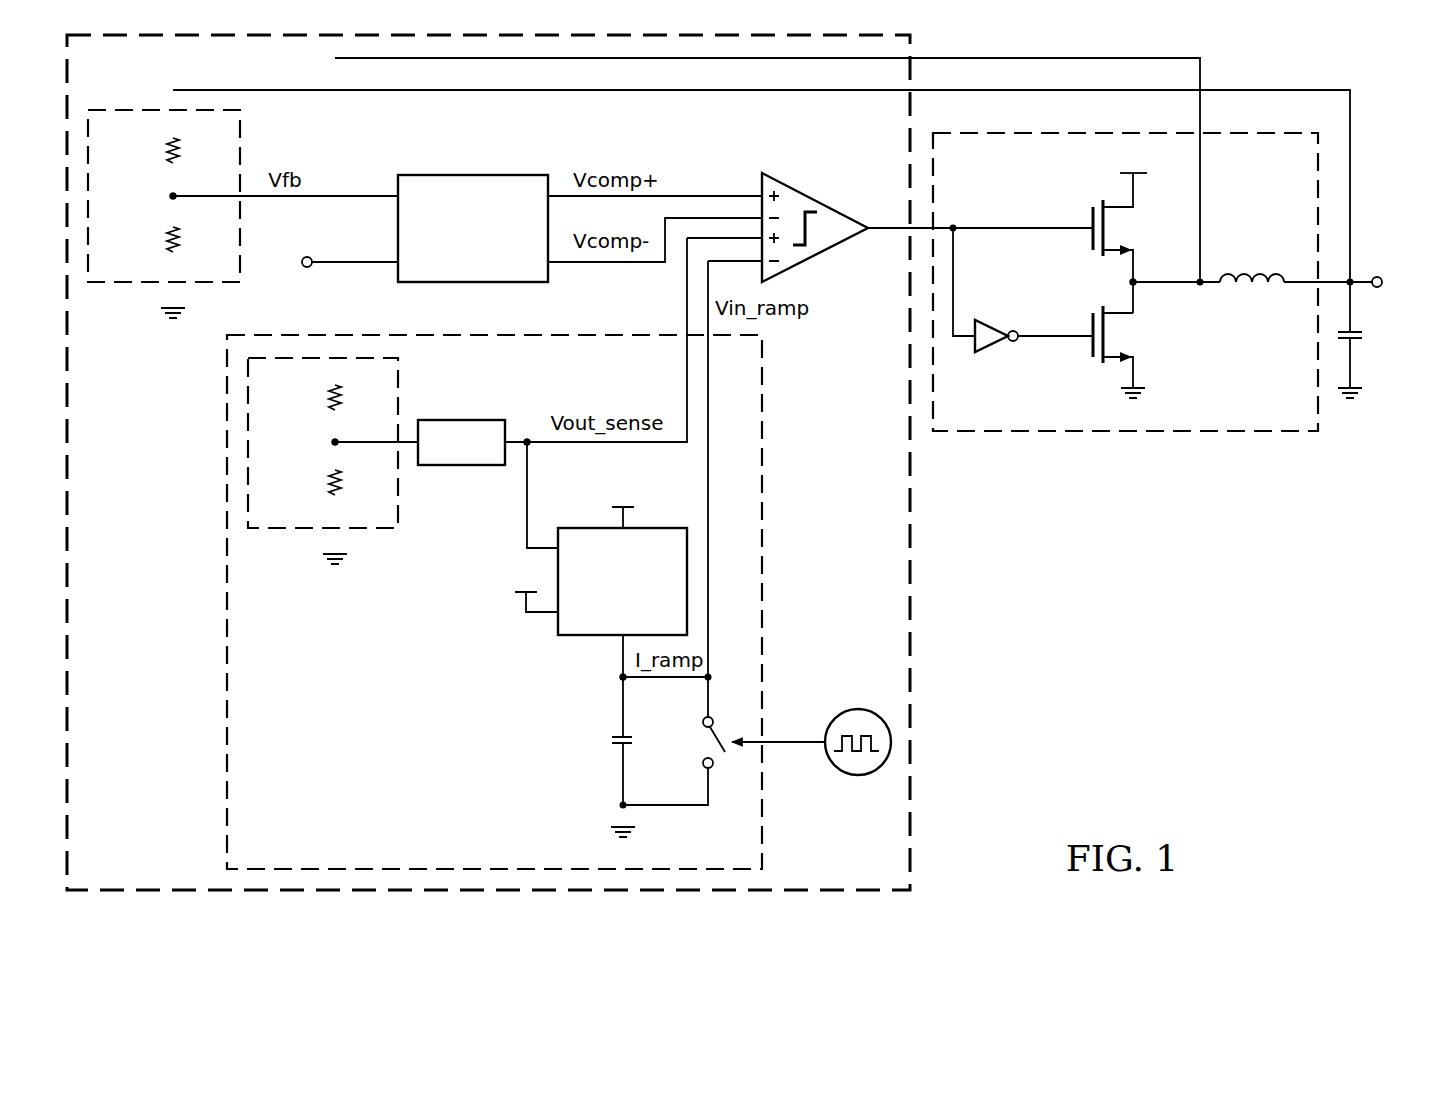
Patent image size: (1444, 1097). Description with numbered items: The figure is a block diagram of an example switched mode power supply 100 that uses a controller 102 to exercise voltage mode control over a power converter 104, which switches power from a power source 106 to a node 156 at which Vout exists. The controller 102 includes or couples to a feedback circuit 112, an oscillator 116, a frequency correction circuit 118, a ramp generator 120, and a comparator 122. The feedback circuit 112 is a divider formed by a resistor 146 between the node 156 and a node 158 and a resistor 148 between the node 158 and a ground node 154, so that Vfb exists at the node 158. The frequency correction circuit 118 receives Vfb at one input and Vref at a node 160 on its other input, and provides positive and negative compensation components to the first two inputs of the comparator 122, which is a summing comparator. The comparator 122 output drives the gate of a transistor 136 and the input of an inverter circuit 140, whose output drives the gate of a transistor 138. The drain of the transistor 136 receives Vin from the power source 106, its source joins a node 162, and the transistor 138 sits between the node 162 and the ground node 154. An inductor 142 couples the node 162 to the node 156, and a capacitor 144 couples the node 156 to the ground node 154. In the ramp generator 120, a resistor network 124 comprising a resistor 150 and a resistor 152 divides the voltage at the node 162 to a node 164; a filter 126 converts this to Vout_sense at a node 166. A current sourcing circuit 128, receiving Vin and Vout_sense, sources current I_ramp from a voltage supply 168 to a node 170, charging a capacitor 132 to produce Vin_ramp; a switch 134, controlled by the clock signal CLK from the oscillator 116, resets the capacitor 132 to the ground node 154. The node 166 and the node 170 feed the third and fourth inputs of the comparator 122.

The switched mode power supply 100 is at (1260, 719).
The controller 102 is at (917, 568).
The power converter 104 is at (1187, 436).
The power source 106 is at (1145, 176).
The feedback circuit 112 is at (148, 106).
The oscillator 116 is at (857, 776).
The frequency correction circuit 118 is at (473, 173).
The ramp generator 120 is at (766, 602).
The comparator 122 is at (810, 197).
The resistor network 124 is at (292, 530).
The filter 126 is at (463, 420).
The current sourcing circuit 128 is at (630, 637).
The capacitor 132 is at (610, 740).
The switch 134 is at (705, 737).
The transistor 136 is at (1089, 218).
The transistor 138 is at (1089, 325).
The inverter circuit 140 is at (992, 348).
The inductor 142 is at (1262, 263).
The capacitor 144 is at (1363, 334).
The resistor 146 is at (168, 146).
The resistor 148 is at (166, 240).
The resistor 150 is at (328, 396).
The resistor 152 is at (328, 484).
The ground node 154 is at (162, 313).
The node 156 is at (1378, 277).
The node 158 is at (178, 200).
The node 160 is at (304, 268).
The node 162 is at (1138, 286).
The node 164 is at (340, 447).
The node 166 is at (532, 446).
The voltage supply 168 is at (618, 505).
The node 170 is at (628, 681).